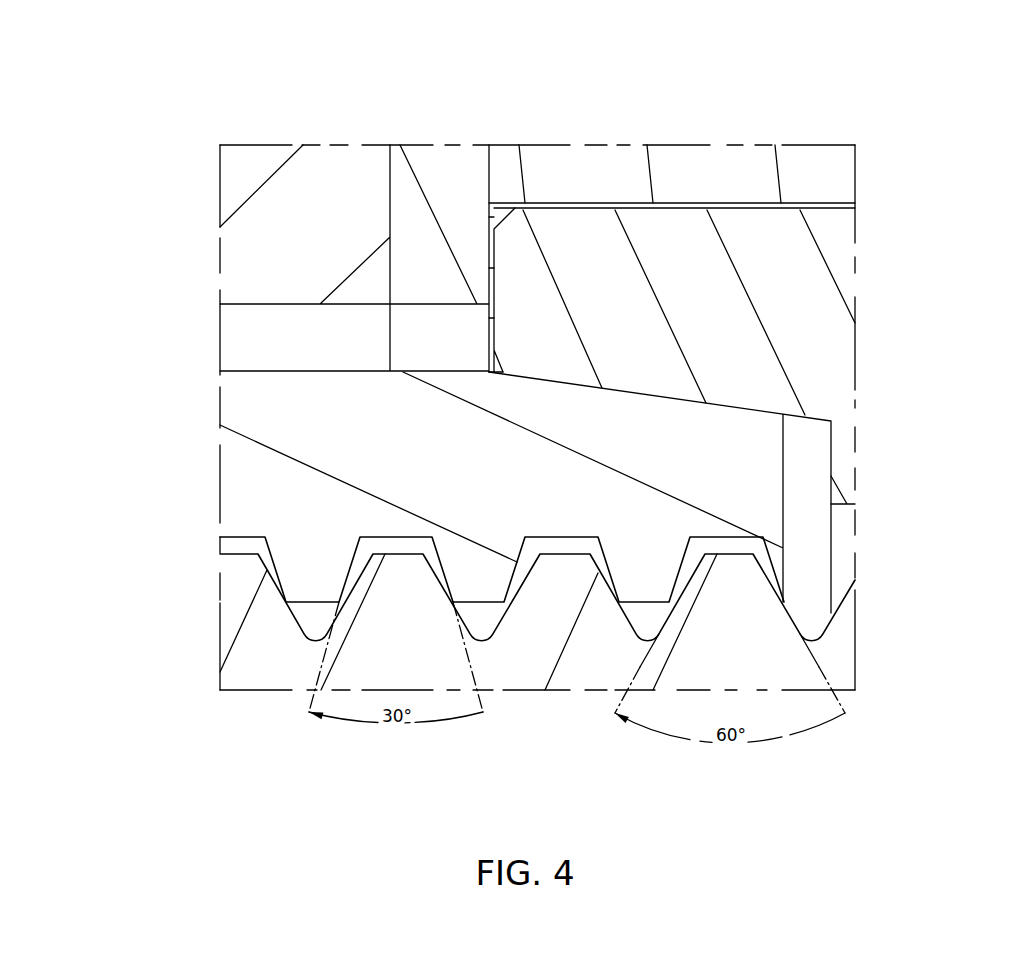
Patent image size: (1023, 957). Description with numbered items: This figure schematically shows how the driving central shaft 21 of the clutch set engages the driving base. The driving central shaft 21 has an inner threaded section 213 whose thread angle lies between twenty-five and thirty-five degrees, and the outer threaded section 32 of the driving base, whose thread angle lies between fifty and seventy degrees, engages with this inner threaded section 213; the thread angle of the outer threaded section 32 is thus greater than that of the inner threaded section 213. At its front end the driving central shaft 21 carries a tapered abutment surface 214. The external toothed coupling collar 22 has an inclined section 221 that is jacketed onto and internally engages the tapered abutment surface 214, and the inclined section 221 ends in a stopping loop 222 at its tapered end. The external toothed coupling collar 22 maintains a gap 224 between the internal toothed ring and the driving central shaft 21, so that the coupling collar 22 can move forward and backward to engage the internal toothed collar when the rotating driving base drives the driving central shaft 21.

The driving central shaft 21 is at (322, 418).
The external toothed coupling collar 22 is at (689, 262).
The inclined section 221 is at (599, 386).
The gap 224 is at (489, 200).
The tapered abutment surface 214 is at (716, 392).
The stopping loop 222 is at (833, 476).
The inner threaded section 213 is at (310, 567).
The outer threaded section 32 is at (390, 583).